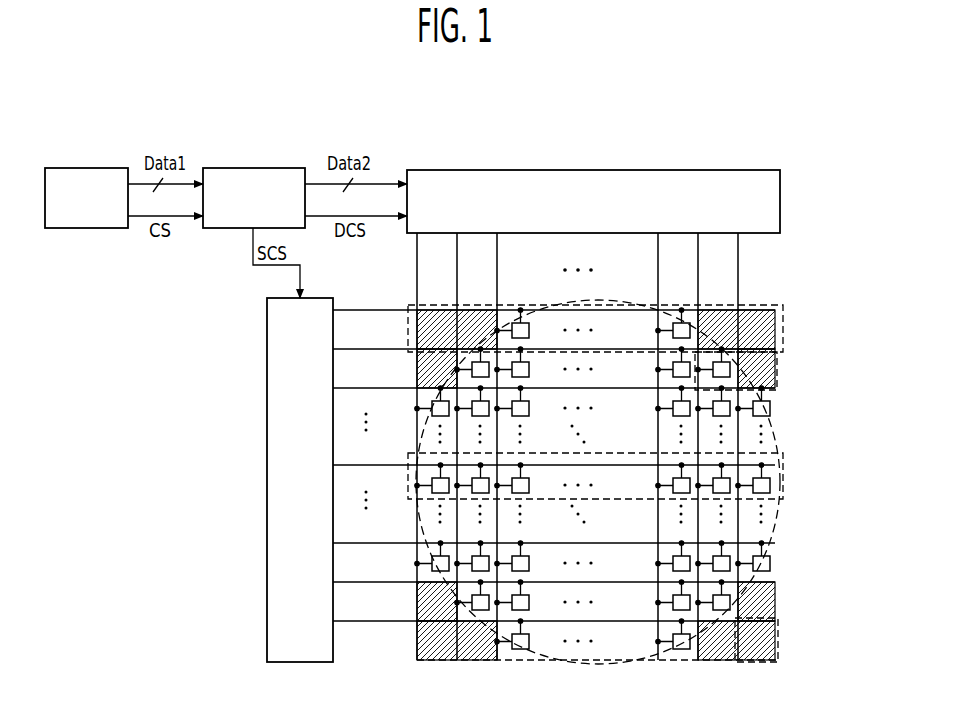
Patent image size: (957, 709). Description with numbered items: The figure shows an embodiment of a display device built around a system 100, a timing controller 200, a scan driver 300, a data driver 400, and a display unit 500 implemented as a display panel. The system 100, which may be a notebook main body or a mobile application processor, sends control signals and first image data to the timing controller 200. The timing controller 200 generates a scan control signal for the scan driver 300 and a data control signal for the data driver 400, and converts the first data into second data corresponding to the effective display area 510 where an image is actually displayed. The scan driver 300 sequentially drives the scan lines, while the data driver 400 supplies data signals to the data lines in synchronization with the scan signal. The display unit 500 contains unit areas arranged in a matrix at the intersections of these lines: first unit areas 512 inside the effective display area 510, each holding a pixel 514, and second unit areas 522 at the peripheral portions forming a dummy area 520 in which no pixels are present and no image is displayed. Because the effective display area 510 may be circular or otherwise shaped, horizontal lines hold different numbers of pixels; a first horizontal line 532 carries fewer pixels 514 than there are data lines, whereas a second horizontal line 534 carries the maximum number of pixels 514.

The system 100 is at (82, 168).
The timing controller 200 is at (250, 168).
The scan driver 300 is at (267, 337).
The data driver 400 is at (656, 170).
The display unit 500 is at (609, 448).
The effective display area 510 is at (772, 545).
The first unit area 512 is at (742, 388).
The pixel 514 is at (752, 366).
The dummy area 520 is at (774, 598).
The second unit area 522 is at (780, 640).
The first horizontal line 532 is at (788, 320).
The second horizontal line 534 is at (788, 468).